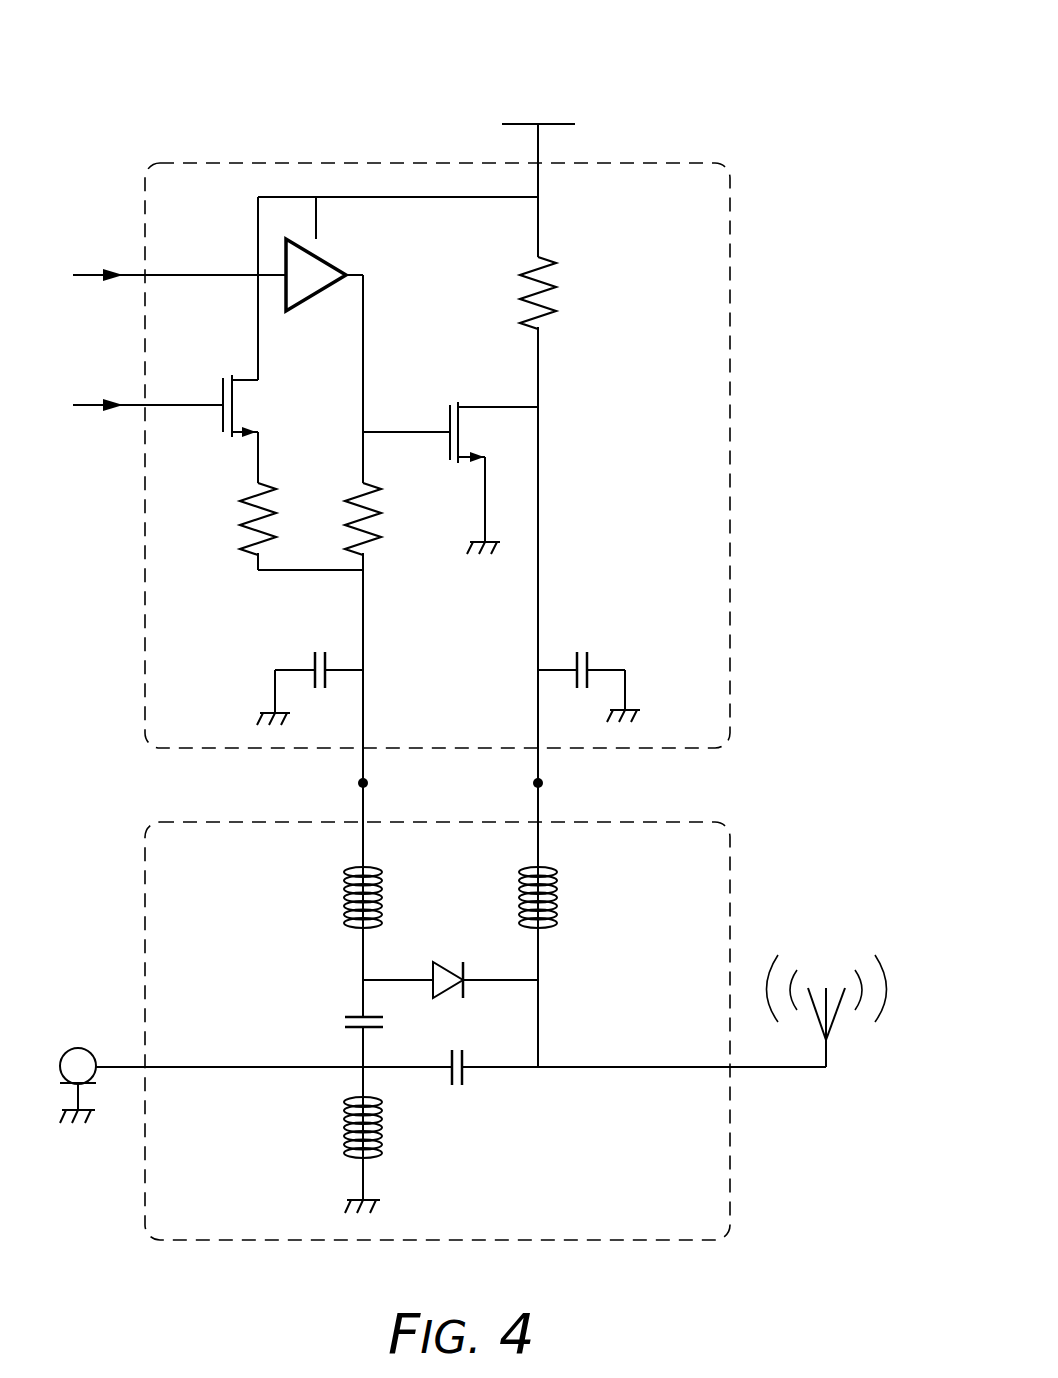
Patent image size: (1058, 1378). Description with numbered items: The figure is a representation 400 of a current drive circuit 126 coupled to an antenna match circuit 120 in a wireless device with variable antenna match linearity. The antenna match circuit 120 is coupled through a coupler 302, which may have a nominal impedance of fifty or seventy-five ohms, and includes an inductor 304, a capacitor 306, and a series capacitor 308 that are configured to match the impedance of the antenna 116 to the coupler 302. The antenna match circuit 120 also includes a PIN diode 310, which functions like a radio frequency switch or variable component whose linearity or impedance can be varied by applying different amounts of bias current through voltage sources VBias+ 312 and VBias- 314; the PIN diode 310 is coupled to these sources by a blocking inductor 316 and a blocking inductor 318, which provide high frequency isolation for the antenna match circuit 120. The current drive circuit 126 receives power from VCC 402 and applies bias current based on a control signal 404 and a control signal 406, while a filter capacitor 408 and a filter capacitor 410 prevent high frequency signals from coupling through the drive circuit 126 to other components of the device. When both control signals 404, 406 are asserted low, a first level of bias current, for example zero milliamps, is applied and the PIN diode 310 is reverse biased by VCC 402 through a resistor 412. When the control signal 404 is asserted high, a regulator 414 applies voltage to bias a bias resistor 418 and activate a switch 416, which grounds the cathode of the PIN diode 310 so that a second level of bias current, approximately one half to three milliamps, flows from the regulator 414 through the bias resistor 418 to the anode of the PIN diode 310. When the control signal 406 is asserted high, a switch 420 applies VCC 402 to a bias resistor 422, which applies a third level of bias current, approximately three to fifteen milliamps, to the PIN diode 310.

The representation of a current drive circuit 400 is at (733, 60).
The current drive circuit 126 is at (185, 163).
The antenna match circuit 120 is at (192, 822).
The VCC 402 is at (557, 86).
The control signal 404 is at (122, 256).
The control signal 406 is at (122, 389).
The regulator 414 is at (379, 249).
The resistor 412 is at (609, 303).
The switch 420 is at (304, 416).
The switch 416 is at (476, 388).
The bias resistor 422 is at (224, 531).
The bias resistor 418 is at (437, 516).
The filter capacitor 408 is at (339, 643).
The filter capacitor 410 is at (601, 643).
The voltage source VBias+ 312 is at (427, 794).
The voltage source VBias- 314 is at (516, 794).
The blocking inductor 316 is at (324, 908).
The blocking inductor 318 is at (616, 908).
The PIN diode 310 is at (469, 946).
The capacitor 306 is at (324, 1031).
The series capacitor 308 is at (476, 1116).
The inductor 304 is at (322, 1139).
The coupler 302 is at (97, 1036).
The antenna 116 is at (846, 1096).